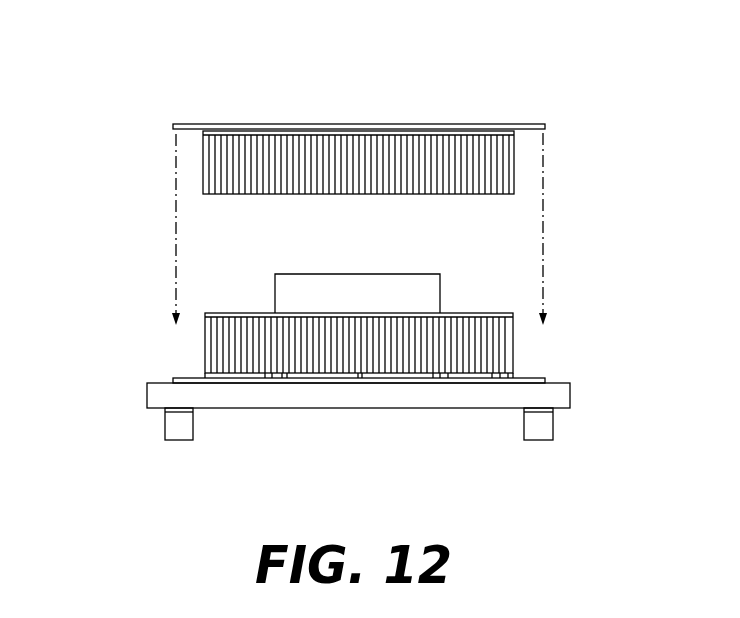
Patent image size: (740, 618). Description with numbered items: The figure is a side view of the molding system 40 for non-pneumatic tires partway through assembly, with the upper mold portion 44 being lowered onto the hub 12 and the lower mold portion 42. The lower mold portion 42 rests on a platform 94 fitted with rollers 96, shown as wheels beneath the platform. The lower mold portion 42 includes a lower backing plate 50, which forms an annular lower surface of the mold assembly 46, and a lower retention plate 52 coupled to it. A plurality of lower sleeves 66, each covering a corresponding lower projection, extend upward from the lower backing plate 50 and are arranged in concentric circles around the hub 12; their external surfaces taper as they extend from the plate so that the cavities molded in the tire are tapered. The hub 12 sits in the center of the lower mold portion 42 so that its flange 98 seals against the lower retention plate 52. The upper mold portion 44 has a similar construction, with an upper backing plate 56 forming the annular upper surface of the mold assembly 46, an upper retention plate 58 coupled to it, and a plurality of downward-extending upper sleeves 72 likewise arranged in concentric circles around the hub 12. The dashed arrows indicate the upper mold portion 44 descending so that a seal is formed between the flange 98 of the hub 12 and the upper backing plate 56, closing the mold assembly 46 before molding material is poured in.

The system for molding non-pneumatic tires 40 is at (114, 124).
The mold assembly 46 is at (523, 70).
The upper mold portion 44 is at (563, 157).
The upper backing plate 56 is at (192, 125).
The lower retention plate 52 is at (250, 131).
The upper sleeves 72 is at (238, 186).
The flange 98 is at (357, 291).
The hub 12 is at (432, 295).
The lower mold portion 42 is at (590, 355).
The lower sleeves 66 is at (512, 340).
The upper retention plate 58 is at (233, 375).
The lower backing plate 50 is at (178, 383).
The platform 94 is at (562, 396).
The rollers 96 is at (180, 435).